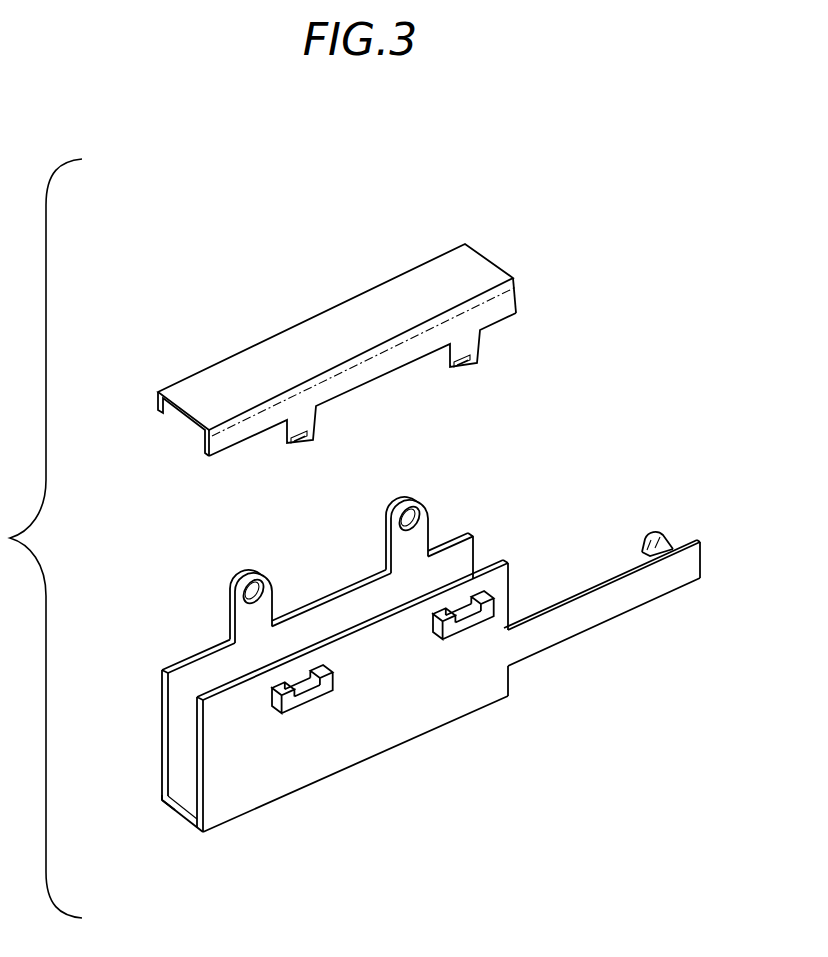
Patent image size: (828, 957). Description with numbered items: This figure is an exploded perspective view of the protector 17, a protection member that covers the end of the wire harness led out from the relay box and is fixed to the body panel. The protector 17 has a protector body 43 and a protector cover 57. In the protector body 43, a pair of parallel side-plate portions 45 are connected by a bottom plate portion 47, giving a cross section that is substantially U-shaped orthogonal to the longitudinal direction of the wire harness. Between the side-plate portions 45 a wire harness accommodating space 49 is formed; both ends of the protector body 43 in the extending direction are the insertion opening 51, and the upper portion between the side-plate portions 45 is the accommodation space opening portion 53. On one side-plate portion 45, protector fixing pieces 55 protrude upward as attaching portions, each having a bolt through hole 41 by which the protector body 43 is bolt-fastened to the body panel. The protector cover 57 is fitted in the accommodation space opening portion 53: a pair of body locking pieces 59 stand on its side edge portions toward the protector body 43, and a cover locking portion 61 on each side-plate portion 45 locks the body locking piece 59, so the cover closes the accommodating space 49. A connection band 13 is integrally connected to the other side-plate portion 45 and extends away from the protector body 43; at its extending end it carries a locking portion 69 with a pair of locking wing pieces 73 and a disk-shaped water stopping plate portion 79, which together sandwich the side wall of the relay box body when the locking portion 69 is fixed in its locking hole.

The connection band 13 is at (622, 570).
The protector 17 is at (359, 335).
The bolt through hole 41 is at (310, 539).
The protector body 43 is at (228, 826).
The side-plate portion 45 is at (340, 687).
The bottom plate portion 47 is at (187, 803).
The wire harness accommodating space 49 is at (343, 617).
The insertion opening 51 is at (190, 697).
The accommodation space opening portion 53 is at (455, 570).
The protector fixing piece 55 is at (408, 507).
The protector cover 57 is at (437, 296).
The body locking piece 59 is at (481, 345).
The cover locking portion 61 is at (327, 704).
The locking portion 69 is at (635, 505).
The locking wing piece 73 is at (644, 546).
The water stopping plate portion 79 is at (697, 538).